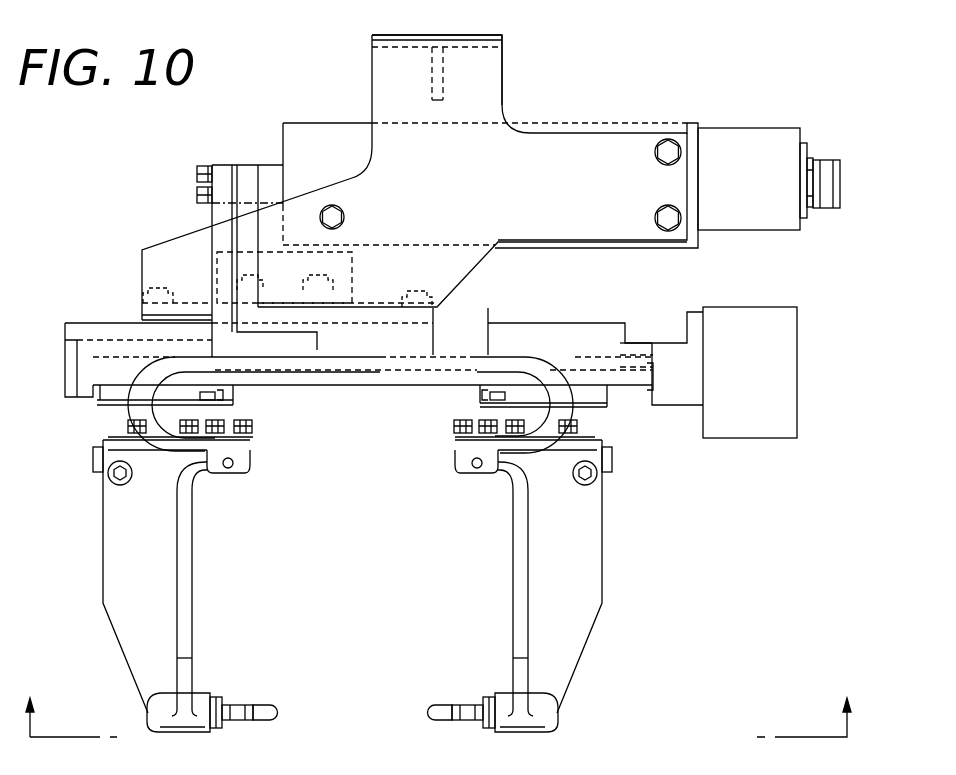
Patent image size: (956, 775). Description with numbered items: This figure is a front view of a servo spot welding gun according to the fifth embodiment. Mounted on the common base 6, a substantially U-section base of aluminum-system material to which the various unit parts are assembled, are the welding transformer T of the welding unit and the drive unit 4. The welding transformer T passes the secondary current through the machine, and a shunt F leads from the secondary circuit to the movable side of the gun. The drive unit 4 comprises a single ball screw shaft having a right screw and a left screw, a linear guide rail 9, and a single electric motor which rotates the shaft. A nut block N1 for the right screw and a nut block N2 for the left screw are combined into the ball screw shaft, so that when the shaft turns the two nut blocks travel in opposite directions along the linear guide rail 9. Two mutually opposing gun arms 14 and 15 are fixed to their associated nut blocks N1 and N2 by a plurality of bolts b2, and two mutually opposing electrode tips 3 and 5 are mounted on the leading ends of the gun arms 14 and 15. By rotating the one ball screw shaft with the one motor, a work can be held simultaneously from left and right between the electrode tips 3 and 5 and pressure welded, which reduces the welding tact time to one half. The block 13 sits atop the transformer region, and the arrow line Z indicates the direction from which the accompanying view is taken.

The welding transformer T is at (312, 130).
The mounting block 13 is at (493, 85).
The common base 6 is at (513, 327).
The drive unit 4 is at (772, 368).
The linear guide rail 9 is at (390, 373).
The shunt F is at (147, 372).
The nut block for a right screw N1 is at (227, 398).
The nut block for a left screw N2 is at (497, 390).
The bolts b2 is at (127, 428).
The gun arm 14 is at (112, 547).
The gun arm 15 is at (592, 553).
The electrode tip 3 is at (273, 707).
The electrode tip 5 is at (430, 712).
The arrow line Z— Z is at (437, 704).